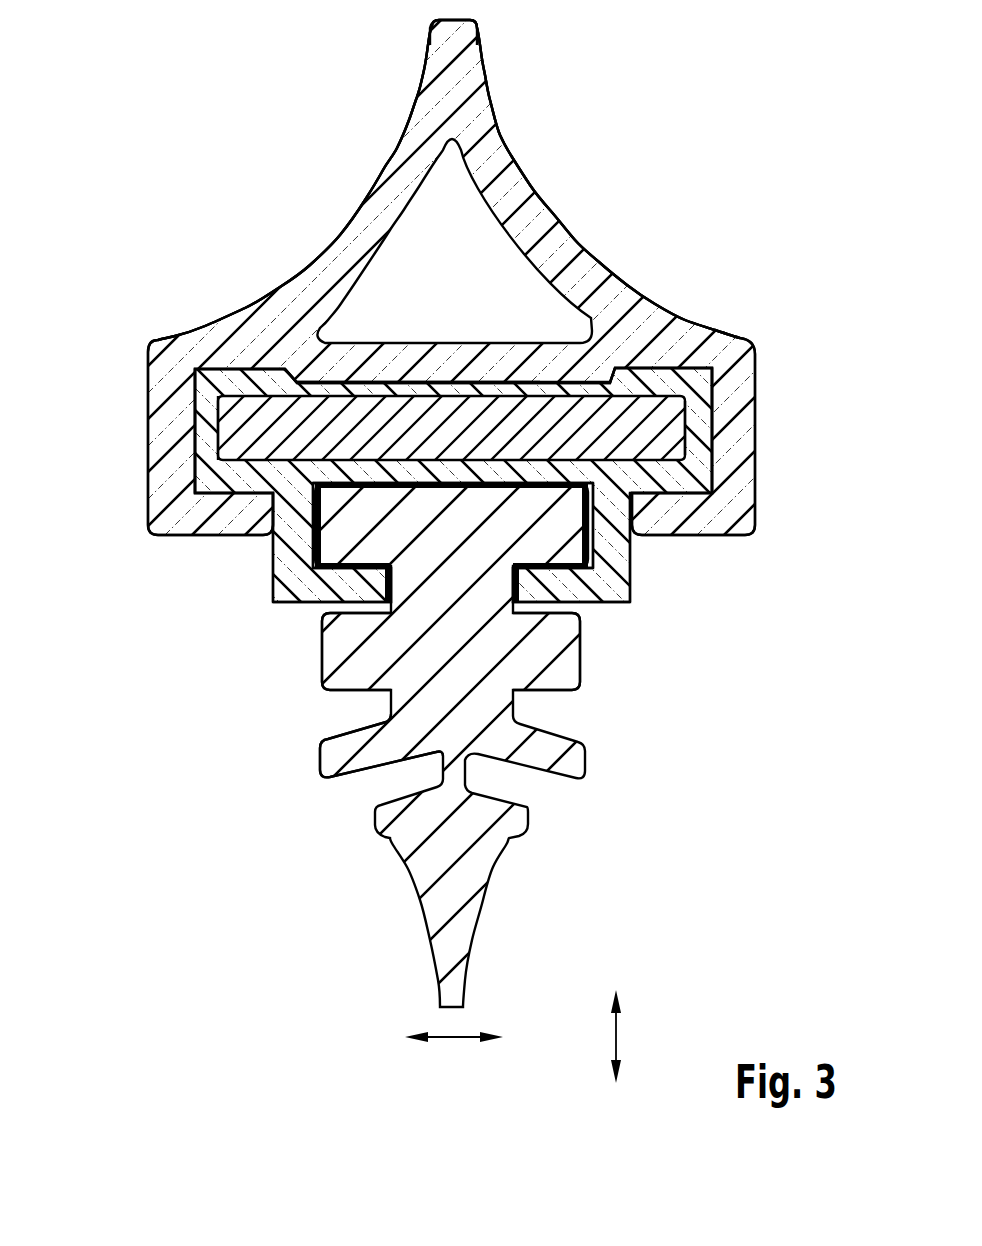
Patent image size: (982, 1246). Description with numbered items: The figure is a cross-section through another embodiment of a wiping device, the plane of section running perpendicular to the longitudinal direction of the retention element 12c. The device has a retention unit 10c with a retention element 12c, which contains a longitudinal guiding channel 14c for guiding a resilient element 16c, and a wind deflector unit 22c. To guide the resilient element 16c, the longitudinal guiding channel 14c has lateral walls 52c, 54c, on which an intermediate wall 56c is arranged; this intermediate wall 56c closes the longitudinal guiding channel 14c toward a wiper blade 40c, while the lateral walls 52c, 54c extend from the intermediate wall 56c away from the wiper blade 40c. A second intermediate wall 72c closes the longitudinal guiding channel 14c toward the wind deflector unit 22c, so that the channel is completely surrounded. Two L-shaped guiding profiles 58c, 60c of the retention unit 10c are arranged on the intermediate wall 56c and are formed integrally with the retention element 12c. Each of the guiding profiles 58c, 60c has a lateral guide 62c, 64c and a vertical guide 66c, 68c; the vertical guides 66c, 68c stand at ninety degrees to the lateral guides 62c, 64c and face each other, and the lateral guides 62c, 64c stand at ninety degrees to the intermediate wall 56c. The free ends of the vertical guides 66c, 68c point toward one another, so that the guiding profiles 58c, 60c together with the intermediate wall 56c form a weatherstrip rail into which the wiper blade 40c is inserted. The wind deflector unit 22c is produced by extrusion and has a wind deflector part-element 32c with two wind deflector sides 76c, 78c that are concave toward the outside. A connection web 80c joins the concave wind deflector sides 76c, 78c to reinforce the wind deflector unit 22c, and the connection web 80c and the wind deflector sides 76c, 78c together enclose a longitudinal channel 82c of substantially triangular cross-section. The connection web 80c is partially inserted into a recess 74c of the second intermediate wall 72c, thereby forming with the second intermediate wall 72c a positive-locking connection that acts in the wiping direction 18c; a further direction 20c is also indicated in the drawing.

The retention unit 10c is at (160, 557).
The retention element 12c is at (300, 583).
The longitudinal guiding channel 14c is at (677, 402).
The resilient element 16c is at (475, 440).
The wiping direction 18c is at (452, 1040).
The vertical direction 20c is at (618, 1037).
The wind deflector unit 22c is at (262, 170).
The wind deflector part-element 32c is at (438, 32).
The wiper blade 40c is at (333, 758).
The lateral wall 52c is at (212, 430).
The lateral wall 54c is at (688, 430).
The intermediate wall 56c is at (385, 470).
The guiding profile 58c is at (348, 588).
The guiding profile 60c is at (605, 590).
The lateral guide 62c is at (280, 550).
The lateral guide 64c is at (617, 550).
The vertical guide 66c is at (330, 602).
The vertical guide 68c is at (580, 603).
The second intermediate wall 72c is at (458, 383).
The recess 74c is at (512, 387).
The wind deflector side 76c is at (383, 136).
The wind deflector side 78c is at (524, 139).
The connection web 80c is at (423, 352).
The longitudinal channel 82c is at (475, 255).